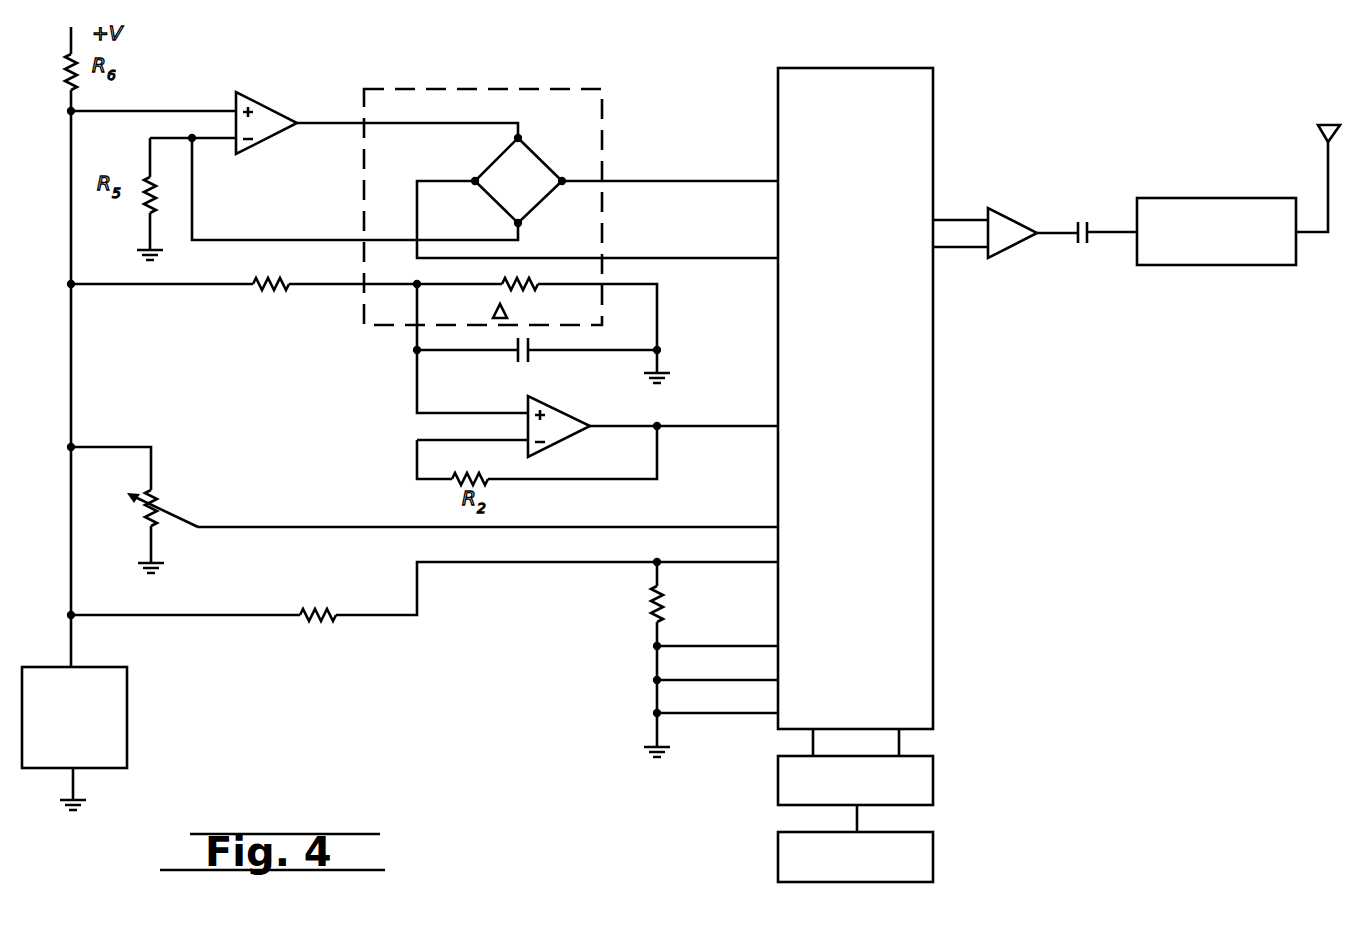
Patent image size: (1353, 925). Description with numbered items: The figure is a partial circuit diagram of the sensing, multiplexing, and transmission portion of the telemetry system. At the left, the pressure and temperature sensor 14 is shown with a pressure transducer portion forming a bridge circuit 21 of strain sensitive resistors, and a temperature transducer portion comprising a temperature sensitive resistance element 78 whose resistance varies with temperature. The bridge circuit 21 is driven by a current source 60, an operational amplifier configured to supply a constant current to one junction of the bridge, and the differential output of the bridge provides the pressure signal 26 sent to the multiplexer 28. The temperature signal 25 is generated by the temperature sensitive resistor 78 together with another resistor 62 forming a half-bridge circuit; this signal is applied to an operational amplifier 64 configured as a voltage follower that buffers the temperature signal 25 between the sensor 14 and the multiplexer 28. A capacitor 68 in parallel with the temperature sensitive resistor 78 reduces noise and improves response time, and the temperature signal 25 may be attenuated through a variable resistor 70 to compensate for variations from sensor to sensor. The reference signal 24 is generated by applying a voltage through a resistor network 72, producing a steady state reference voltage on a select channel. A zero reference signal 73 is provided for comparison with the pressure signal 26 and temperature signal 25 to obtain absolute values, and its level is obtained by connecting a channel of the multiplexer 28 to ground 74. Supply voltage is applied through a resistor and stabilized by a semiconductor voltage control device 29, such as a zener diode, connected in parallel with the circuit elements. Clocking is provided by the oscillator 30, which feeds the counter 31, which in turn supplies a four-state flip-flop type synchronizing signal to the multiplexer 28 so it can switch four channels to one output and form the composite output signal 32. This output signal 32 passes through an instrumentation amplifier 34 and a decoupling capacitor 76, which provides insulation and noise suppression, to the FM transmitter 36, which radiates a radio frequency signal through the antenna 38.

The pressure and temperature sensor 14 is at (602, 88).
The bridge circuit 21 is at (537, 157).
The reference signal 24 is at (708, 563).
The temperature signal 25 is at (698, 427).
The pressure signal 26 is at (683, 182).
The multiplexer 28 is at (942, 411).
The semiconductor voltage control device 29 is at (134, 721).
The oscillator 30 is at (944, 872).
The counter 31 is at (944, 794).
The composite output signal 32 is at (958, 218).
The instrumentation amplifier 34 is at (1016, 216).
The FM transmitter 36 is at (1258, 266).
The antenna 38 is at (1320, 141).
The current source 60 is at (270, 106).
The resistor 62 is at (291, 289).
The operational amplifier 64 is at (564, 414).
The capacitor 68 is at (510, 355).
The variable resistor 70 is at (160, 498).
The resistor network 72 is at (311, 609).
The zero reference signal 73 is at (655, 693).
The ground 74 is at (654, 736).
The decoupling capacitor 76 is at (1090, 224).
The temperature sensitive resistance element 78 is at (530, 283).